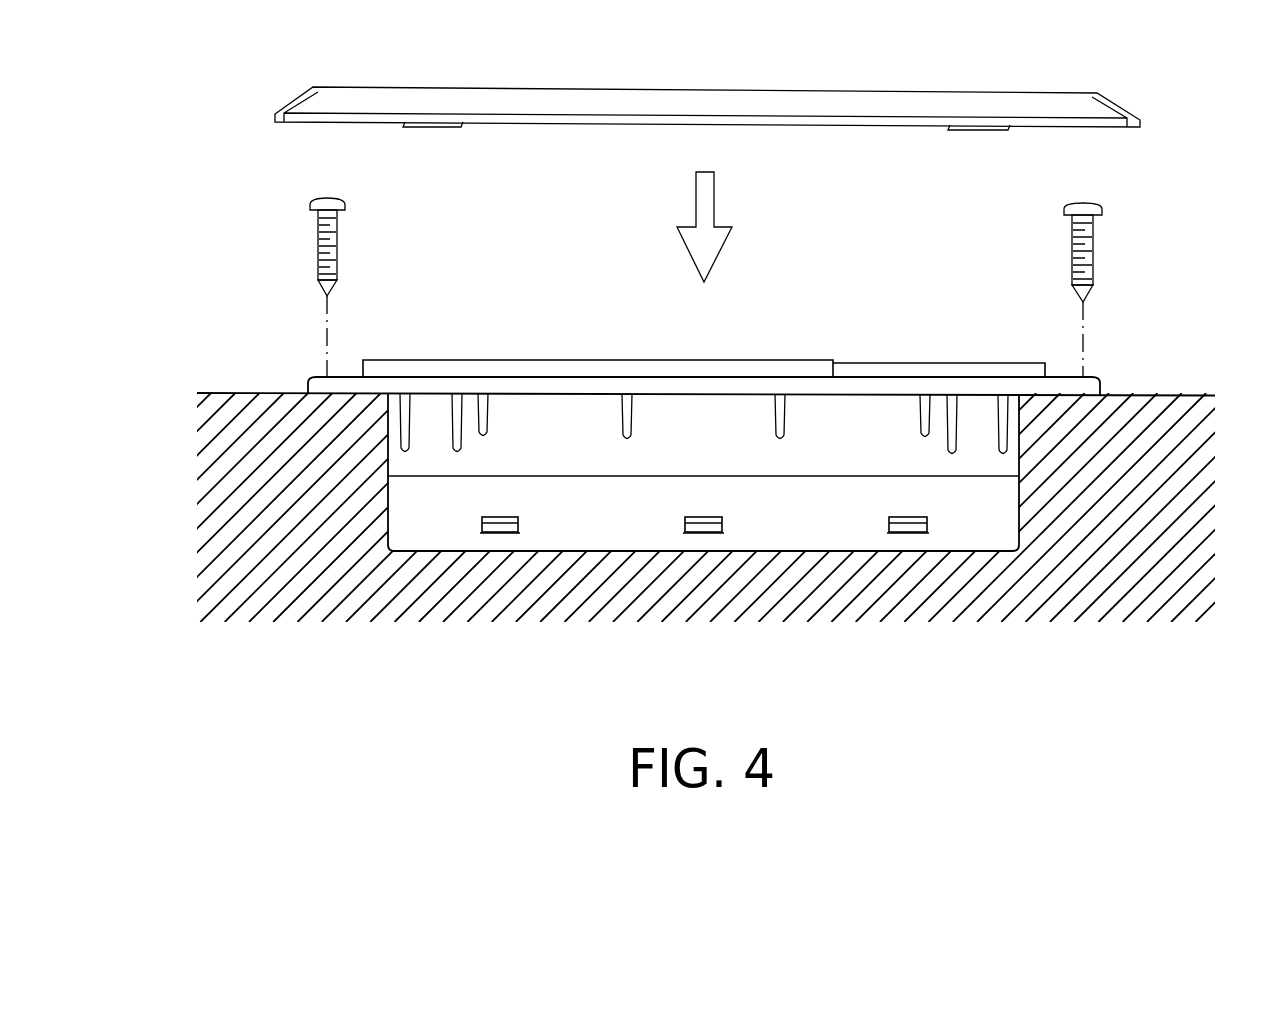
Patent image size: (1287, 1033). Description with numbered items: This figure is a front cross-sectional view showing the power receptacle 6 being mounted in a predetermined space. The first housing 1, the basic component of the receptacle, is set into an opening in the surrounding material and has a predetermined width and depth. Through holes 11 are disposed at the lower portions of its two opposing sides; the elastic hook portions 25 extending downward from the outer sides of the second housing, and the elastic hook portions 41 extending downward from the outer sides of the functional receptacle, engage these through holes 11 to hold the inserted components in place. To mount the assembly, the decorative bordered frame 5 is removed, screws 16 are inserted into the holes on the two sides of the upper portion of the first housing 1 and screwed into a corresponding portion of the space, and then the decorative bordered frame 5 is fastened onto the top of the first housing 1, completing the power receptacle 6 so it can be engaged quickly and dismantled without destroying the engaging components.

The first housing 1 is at (1098, 383).
The decorative bordered frame 5 is at (323, 104).
The power receptacle 6 is at (1155, 170).
The through holes 11 is at (483, 545).
The screw 16 is at (318, 242).
The hook portion 25 is at (511, 545).
The hook portion 41 is at (918, 545).